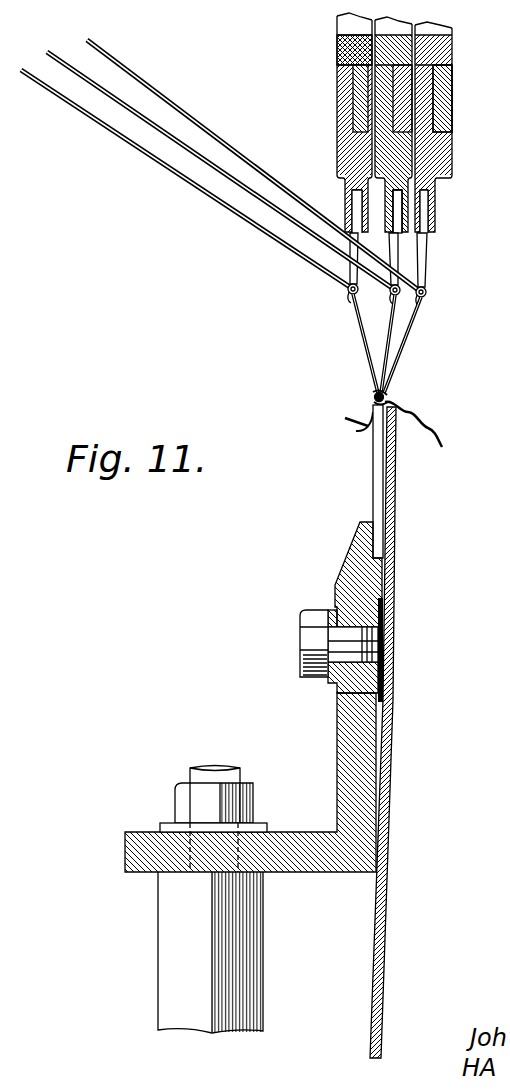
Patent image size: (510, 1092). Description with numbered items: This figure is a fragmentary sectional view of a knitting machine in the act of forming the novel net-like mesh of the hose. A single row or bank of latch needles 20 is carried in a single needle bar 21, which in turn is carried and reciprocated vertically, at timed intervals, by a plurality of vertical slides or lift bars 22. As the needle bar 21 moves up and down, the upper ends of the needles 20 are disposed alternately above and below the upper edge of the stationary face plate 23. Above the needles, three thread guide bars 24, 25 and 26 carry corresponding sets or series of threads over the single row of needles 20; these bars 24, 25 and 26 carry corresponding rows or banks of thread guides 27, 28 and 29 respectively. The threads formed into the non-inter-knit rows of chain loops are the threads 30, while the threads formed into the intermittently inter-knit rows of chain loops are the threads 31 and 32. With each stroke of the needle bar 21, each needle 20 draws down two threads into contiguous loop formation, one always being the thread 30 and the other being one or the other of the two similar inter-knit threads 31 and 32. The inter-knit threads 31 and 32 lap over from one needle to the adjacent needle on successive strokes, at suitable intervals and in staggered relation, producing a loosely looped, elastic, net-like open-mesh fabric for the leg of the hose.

The latch needles 20 is at (374, 490).
The needle bar 21 is at (348, 557).
The lift bars 22 is at (178, 933).
The stationary face plate 23 is at (396, 473).
The thread guide bar 24 is at (340, 157).
The thread guide bar 25 is at (390, 214).
The thread guide bar 26 is at (440, 185).
The thread guides 27 is at (350, 268).
The thread guides 28 is at (390, 280).
The thread guides 29 is at (429, 272).
The thread 30 is at (366, 346).
The inter-knit thread 31 is at (388, 328).
The inter-knit thread 32 is at (409, 345).